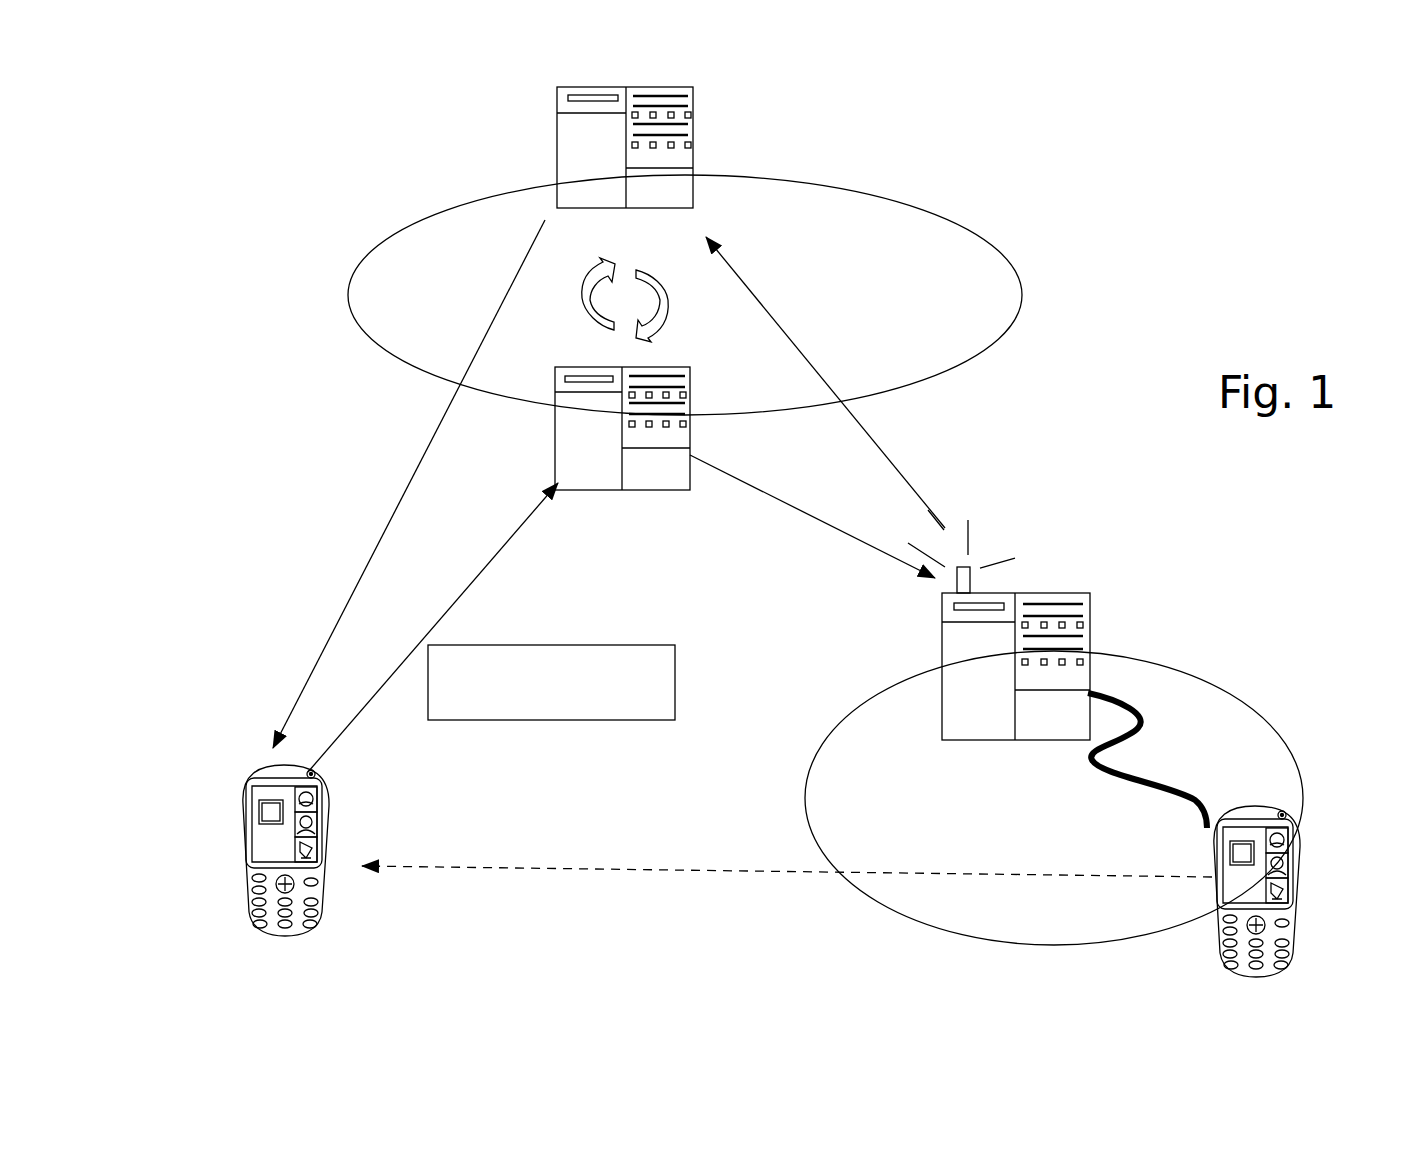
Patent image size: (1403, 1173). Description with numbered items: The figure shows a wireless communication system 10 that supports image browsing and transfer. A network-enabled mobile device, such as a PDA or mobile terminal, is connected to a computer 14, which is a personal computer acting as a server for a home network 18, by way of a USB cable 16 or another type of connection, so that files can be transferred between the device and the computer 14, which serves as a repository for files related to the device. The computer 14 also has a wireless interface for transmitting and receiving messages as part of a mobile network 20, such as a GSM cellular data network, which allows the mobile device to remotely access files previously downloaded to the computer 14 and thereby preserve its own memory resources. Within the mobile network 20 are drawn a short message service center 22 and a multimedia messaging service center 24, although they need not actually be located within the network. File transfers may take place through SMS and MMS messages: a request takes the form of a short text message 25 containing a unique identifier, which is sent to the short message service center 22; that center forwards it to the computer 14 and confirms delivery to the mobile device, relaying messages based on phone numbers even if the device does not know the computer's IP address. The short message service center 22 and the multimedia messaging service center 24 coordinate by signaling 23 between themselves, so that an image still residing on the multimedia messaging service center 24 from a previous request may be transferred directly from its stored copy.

The wireless communication system 10 is at (1052, 246).
The computer 14 is at (1085, 610).
The USB cable 16 is at (1125, 703).
The home network 18 is at (830, 760).
The mobile network 20 is at (827, 225).
The short message service center 22 is at (680, 455).
The signaling 23 is at (567, 320).
The multimedia messaging service center 24 is at (680, 186).
The short text message 25 is at (650, 672).